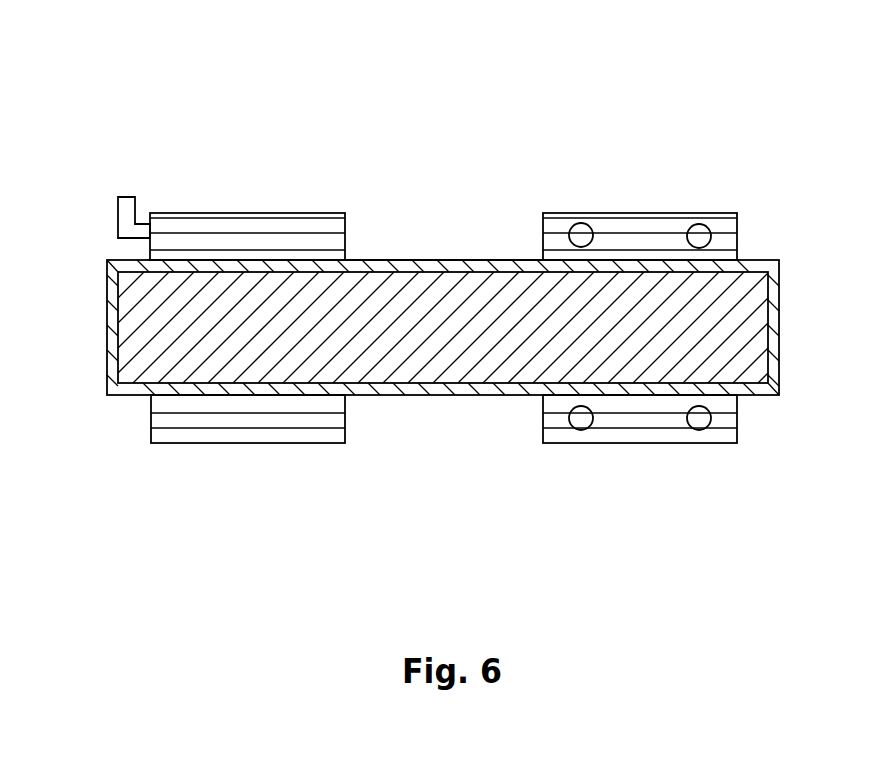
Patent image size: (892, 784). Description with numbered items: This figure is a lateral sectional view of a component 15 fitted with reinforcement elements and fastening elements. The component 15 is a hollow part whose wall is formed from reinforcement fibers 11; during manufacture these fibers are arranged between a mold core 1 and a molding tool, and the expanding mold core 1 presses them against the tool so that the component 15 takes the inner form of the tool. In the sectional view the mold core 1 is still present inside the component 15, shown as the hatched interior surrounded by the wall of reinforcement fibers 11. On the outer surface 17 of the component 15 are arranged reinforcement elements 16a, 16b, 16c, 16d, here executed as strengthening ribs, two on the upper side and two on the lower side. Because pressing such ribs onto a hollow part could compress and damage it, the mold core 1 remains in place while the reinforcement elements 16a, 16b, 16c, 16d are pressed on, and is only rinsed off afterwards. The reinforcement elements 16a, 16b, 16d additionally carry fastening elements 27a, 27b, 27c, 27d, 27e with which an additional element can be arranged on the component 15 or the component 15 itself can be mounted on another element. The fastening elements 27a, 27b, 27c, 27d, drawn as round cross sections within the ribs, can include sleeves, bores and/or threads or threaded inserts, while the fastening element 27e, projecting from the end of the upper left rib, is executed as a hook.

The mold core 1 is at (387, 353).
The reinforcement fibers 11 is at (488, 388).
The component 15 is at (416, 125).
The reinforcement element 16a is at (227, 243).
The reinforcement element 16b is at (637, 240).
The reinforcement element 16c is at (238, 418).
The reinforcement element 16d is at (637, 422).
The outer surface 17 is at (490, 262).
The fastening element 27a is at (580, 232).
The fastening element 27b is at (699, 232).
The fastening element 27c is at (581, 420).
The fastening element 27d is at (699, 420).
The fastening element 27e is at (117, 218).